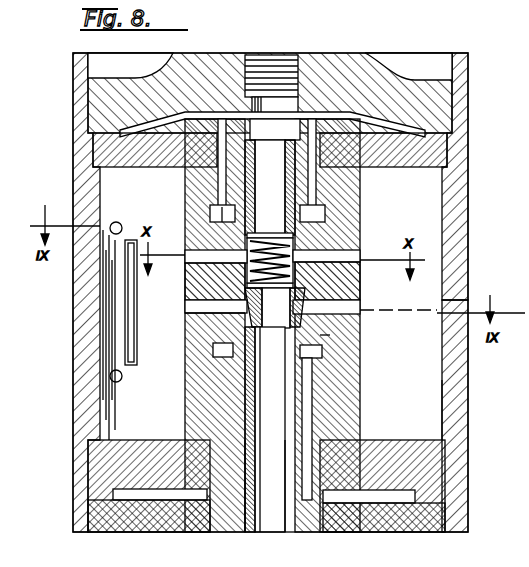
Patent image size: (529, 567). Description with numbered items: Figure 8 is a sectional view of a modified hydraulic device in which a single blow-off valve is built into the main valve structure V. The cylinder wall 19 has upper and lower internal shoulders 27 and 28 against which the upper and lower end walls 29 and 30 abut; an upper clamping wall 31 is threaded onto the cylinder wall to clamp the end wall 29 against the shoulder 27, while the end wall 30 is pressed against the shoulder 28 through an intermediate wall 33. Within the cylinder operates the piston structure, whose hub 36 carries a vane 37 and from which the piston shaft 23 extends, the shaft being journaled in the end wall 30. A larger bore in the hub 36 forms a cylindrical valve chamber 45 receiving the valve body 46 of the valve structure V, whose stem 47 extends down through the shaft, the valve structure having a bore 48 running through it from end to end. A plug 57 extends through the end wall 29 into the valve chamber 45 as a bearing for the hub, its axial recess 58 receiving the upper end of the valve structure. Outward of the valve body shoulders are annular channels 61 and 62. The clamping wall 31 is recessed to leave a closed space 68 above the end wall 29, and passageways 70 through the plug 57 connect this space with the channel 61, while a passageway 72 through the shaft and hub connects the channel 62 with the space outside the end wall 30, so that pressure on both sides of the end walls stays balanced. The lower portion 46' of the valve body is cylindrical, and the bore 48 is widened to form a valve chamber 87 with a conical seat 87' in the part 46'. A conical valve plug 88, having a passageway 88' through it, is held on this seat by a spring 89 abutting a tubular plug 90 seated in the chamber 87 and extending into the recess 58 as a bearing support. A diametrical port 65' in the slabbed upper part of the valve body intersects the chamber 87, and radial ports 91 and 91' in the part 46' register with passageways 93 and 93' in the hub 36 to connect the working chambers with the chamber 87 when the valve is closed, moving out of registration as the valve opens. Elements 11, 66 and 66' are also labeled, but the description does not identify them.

The screw 11 is at (400, 502).
The cylinder wall 19 is at (90, 352).
The piston shaft 23 is at (222, 522).
The upper internal shoulder 27 is at (456, 180).
The lower internal shoulder 28 is at (440, 440).
The upper end wall 29 is at (430, 155).
The lower end wall 30 is at (420, 480).
The upper clamping wall 31 is at (432, 110).
The intermediate wall 33 is at (438, 522).
The piston hub 36 is at (350, 410).
The vane 37 is at (112, 280).
The valve chamber 45 is at (215, 212).
The valve body 46 is at (305, 209).
The cylindrical lower portion of valve body 46' is at (191, 355).
The valve stem 47 is at (244, 532).
The valve bore 48 is at (272, 532).
The plug 57 is at (236, 140).
The axial recess 58 is at (302, 135).
The upper annular channel 61 is at (352, 187).
The lower annular channel 62 is at (320, 350).
The diametrically extending port 65' is at (319, 254).
The passage 66 is at (203, 247).
The passage 66' is at (342, 251).
The closed space 68 is at (363, 123).
The passageways 70 is at (333, 125).
The passageway 72 is at (310, 435).
The valve chamber 87 is at (200, 281).
The conical valve seat 87' is at (197, 324).
The conical valve plug 88 is at (270, 429).
The passageway 88' is at (202, 429).
The spring 89 is at (272, 177).
The tubular plug 90 is at (252, 150).
The radial port 91 is at (275, 308).
The radial port 91' is at (343, 281).
The hub passageway 93 is at (143, 317).
The hub passageway 93' is at (352, 317).
The valve structure V is at (332, 335).